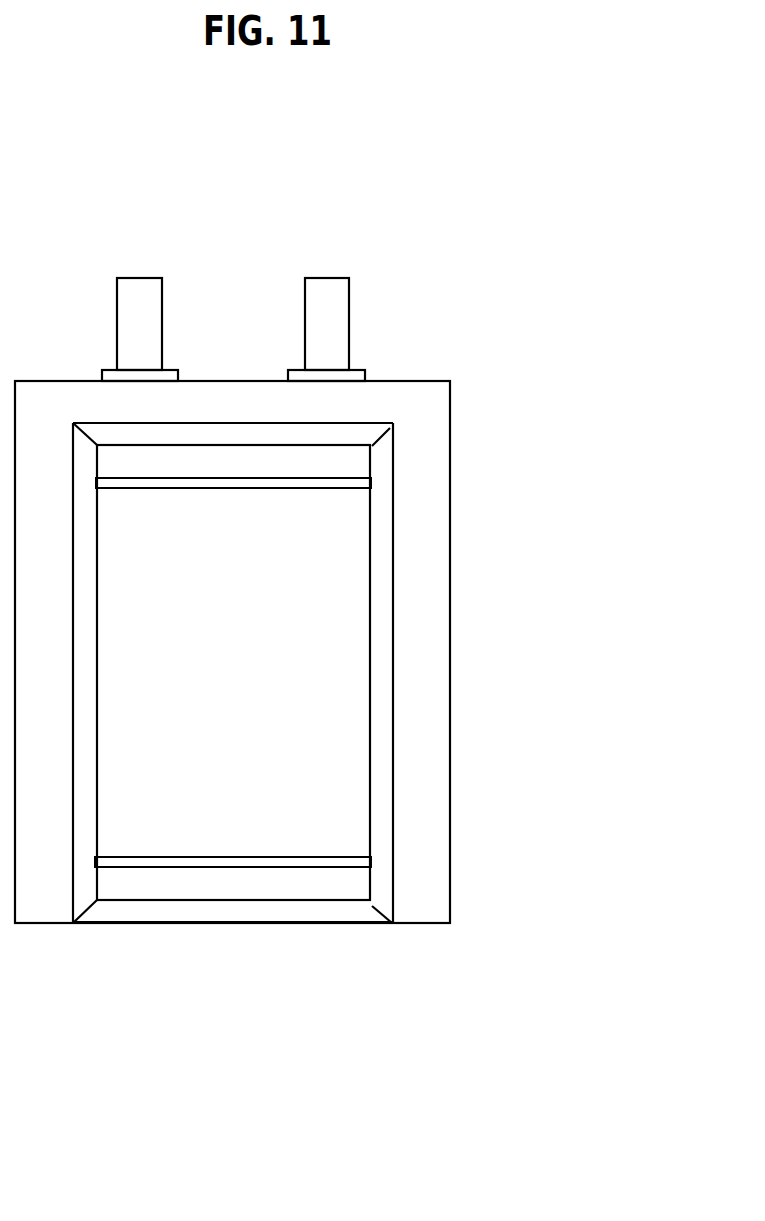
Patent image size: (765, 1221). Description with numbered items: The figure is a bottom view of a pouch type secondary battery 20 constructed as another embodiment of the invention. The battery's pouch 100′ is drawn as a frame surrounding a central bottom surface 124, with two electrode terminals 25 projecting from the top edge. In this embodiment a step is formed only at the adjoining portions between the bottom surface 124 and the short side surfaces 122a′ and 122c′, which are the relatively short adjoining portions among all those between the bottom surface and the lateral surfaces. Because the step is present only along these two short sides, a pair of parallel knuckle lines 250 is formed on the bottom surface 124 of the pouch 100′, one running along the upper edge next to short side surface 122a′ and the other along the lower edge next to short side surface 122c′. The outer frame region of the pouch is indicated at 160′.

The pouch type secondary battery 20 is at (508, 227).
The electrode terminal 25 is at (142, 278).
The pouch 100′ is at (462, 517).
The short side surface 122a′ is at (300, 438).
The short side surface 122c′ is at (228, 910).
The bottom surface 124 is at (227, 662).
The side plate 160′ is at (410, 675).
The knuckle lines 250 is at (285, 477).